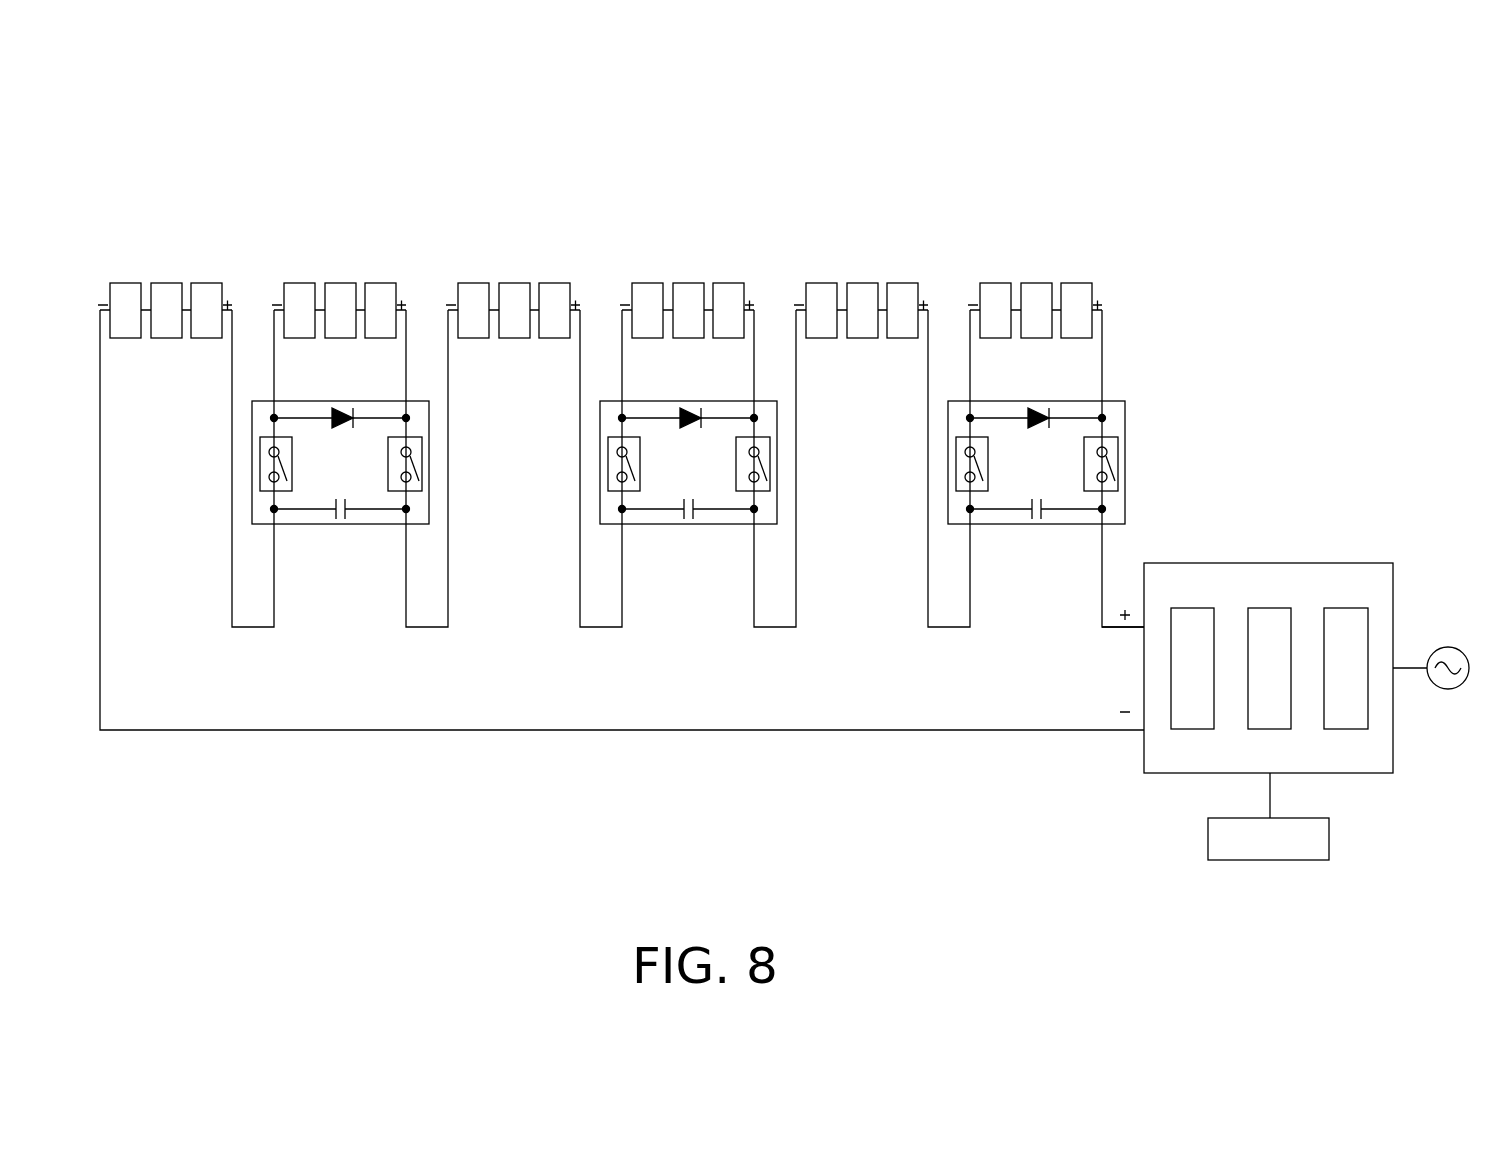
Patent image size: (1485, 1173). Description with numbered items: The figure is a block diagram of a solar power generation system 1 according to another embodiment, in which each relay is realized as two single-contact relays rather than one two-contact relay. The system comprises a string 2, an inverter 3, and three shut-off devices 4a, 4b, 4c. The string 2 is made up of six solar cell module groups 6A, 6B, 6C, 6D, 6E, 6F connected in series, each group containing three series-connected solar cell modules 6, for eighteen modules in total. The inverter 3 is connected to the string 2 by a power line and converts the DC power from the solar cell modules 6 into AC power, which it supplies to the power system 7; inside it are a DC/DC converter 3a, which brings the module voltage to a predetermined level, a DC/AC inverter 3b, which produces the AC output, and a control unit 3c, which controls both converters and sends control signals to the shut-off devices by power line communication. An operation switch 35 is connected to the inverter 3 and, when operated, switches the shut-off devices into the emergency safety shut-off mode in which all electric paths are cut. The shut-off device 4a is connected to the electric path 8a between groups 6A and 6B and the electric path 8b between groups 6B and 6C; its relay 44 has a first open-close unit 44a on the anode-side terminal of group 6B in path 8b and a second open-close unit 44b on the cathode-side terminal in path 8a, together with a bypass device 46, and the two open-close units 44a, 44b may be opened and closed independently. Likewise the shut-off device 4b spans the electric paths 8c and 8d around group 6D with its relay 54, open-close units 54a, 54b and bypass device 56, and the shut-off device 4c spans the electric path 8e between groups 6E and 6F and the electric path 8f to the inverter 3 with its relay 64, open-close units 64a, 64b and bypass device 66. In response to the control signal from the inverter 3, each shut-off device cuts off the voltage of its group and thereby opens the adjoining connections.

The solar power generation system 1 is at (1264, 223).
The string 2 is at (118, 120).
The inverter 3 is at (1270, 597).
The DC/DC converter 3a is at (1195, 608).
The DC/AC inverter 3b is at (1272, 608).
The control unit 3c is at (1348, 608).
The shut-off device 4a is at (327, 522).
The shut-off device 4b is at (674, 519).
The shut-off device 4c is at (1035, 518).
The solar cell module 6 is at (600, 233).
The solar cell module group 6A is at (112, 182).
The solar cell module group 6B is at (286, 182).
The solar cell module group 6C is at (460, 182).
The solar cell module group 6D is at (634, 182).
The solar cell module group 6E is at (808, 182).
The solar cell module group 6F is at (1035, 233).
The power system 7 is at (1449, 647).
The electric path 8a is at (253, 628).
The electric path 8b is at (427, 628).
The electric path 8c is at (601, 628).
The electric path 8d is at (775, 628).
The electric path 8e is at (949, 628).
The electric path 8f is at (1123, 628).
The operation switch 35 is at (1329, 838).
The relay 44 is at (327, 464).
The first open-close unit 44a is at (416, 460).
The second open-close unit 44b is at (268, 466).
The bypass device 46 is at (340, 410).
The relay 54 is at (674, 472).
The first open-close unit 54a is at (764, 457).
The second open-close unit 54b is at (616, 466).
The bypass device 56 is at (688, 410).
The relay 64 is at (1035, 473).
The first open-close unit 64a is at (1112, 460).
The second open-close unit 64b is at (964, 466).
The bypass device 66 is at (1036, 410).